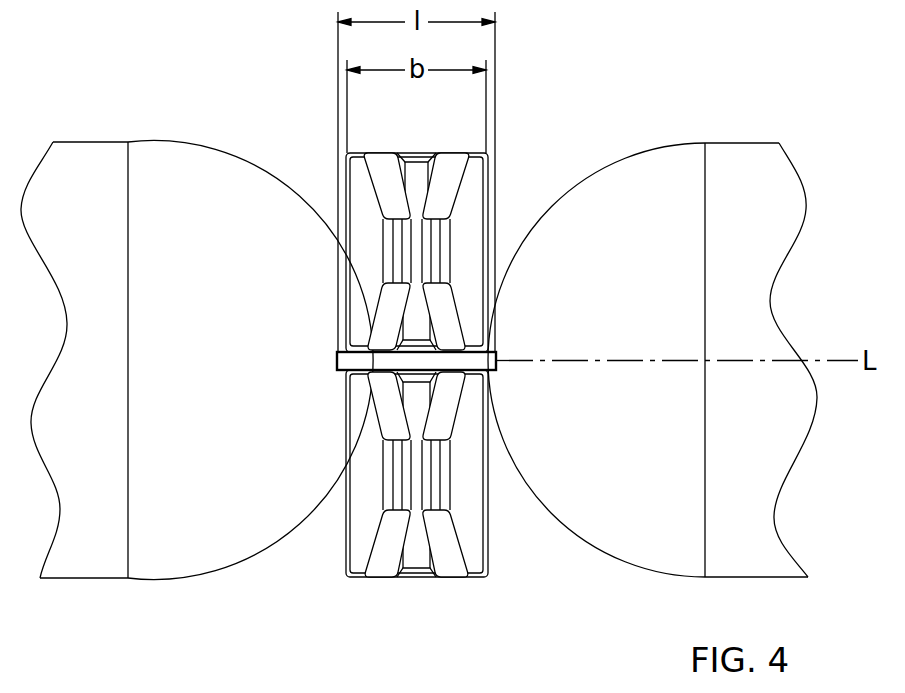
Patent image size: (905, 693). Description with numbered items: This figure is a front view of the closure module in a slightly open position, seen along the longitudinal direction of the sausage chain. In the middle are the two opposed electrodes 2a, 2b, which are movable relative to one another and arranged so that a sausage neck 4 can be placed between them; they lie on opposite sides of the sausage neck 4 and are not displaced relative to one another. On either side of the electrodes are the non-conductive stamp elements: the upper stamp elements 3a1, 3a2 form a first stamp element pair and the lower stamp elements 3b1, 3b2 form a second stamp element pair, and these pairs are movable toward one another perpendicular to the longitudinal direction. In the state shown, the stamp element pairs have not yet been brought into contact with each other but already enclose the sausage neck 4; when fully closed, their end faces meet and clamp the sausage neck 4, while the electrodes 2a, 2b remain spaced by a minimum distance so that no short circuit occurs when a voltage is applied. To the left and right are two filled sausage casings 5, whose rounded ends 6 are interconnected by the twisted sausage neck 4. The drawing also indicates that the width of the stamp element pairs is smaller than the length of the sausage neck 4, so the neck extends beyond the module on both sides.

The electrode 2a is at (413, 155).
The electrode 2b is at (417, 567).
The stamp element 3a1 is at (453, 182).
The stamp element 3a2 is at (383, 189).
The stamp element 3b1 is at (453, 568).
The stamp element 3b2 is at (385, 568).
The sausage neck 4 is at (380, 362).
The filled sausage casing 5 is at (106, 152).
The rounded end 6 is at (222, 533).